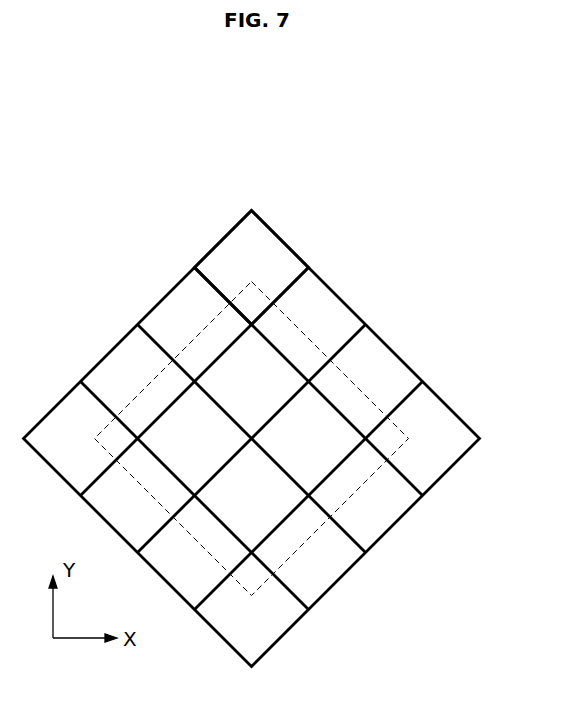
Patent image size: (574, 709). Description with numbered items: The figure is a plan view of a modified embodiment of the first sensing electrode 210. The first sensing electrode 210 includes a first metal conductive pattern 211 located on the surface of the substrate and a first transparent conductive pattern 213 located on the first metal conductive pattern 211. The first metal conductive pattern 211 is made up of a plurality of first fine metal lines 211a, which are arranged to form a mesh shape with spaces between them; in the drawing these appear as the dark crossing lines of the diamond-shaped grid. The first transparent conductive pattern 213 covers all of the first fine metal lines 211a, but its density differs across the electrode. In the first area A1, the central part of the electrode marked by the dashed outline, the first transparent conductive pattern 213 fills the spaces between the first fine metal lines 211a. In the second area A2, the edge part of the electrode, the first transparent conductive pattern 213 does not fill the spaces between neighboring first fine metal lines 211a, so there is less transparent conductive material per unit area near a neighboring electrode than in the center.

The first sensing electrode 210 is at (315, 150).
The first metal conductive pattern 211 is at (225, 237).
The first fine metal lines 211a is at (221, 292).
The first transparent conductive pattern 213 is at (267, 246).
The first area A1 is at (305, 463).
The second area A2 is at (442, 412).